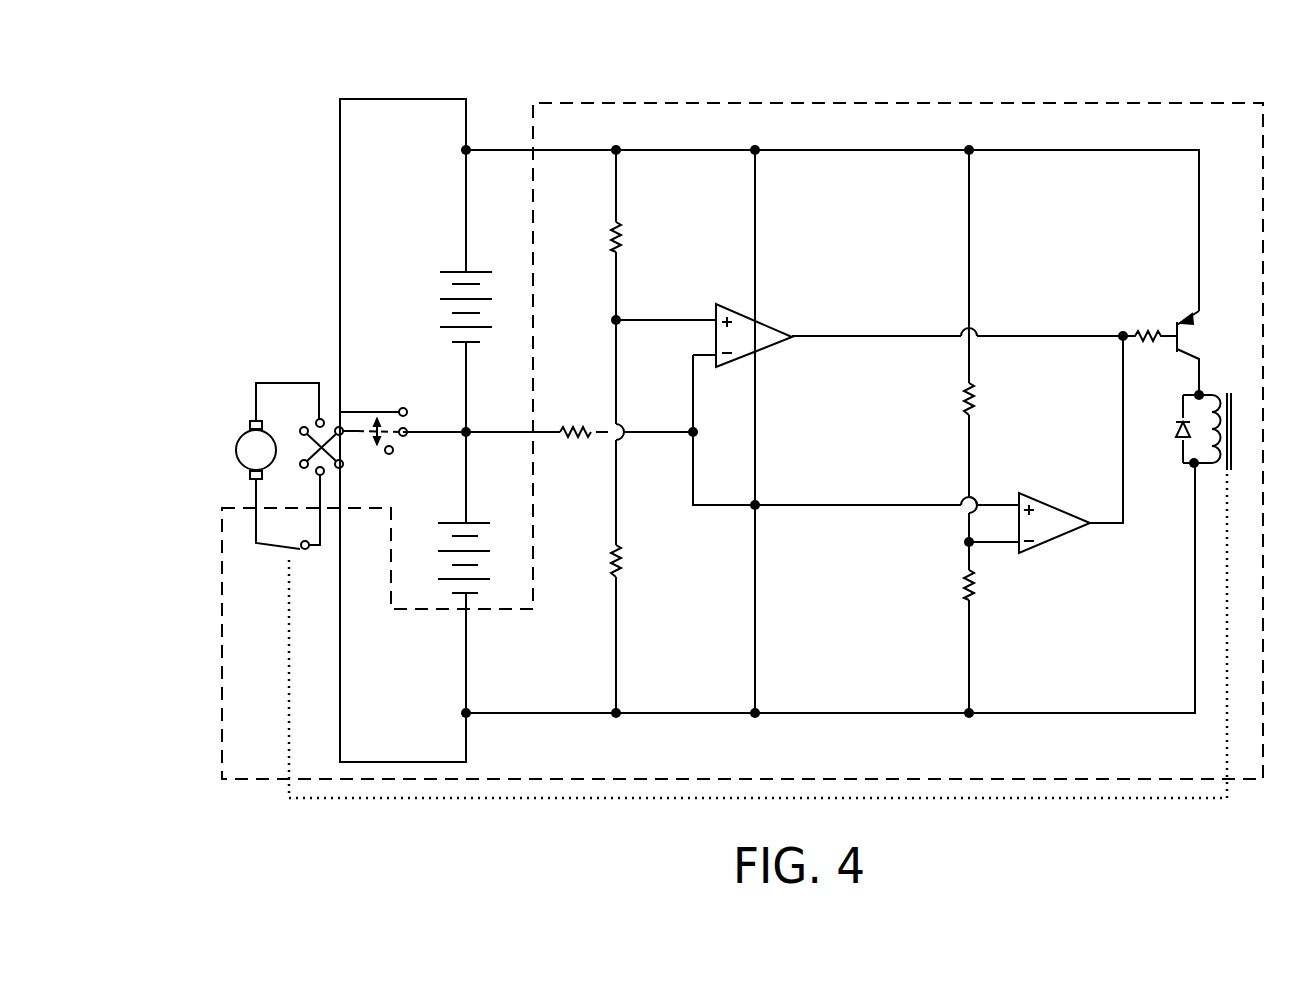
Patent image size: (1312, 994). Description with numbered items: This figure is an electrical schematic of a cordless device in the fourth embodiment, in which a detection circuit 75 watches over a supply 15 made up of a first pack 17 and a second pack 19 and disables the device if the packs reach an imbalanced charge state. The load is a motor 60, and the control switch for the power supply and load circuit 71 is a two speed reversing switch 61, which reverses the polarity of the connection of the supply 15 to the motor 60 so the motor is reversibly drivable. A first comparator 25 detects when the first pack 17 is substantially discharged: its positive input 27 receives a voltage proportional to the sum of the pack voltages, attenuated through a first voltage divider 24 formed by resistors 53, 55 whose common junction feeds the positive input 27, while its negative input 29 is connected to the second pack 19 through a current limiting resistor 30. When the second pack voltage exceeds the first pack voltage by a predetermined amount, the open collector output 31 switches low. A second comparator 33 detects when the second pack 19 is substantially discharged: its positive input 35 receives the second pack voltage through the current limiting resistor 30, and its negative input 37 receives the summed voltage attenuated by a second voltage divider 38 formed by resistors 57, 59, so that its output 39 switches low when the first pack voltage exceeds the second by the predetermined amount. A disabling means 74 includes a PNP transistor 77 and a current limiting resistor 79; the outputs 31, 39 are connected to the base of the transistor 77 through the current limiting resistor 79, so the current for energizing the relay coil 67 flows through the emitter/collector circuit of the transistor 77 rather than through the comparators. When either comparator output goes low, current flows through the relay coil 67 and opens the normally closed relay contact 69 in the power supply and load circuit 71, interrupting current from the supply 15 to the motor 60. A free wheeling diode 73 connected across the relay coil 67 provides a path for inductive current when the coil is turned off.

The supply 15 is at (456, 431).
The first pack 17 is at (453, 293).
The second pack 19 is at (452, 572).
The first voltage divider 24 is at (648, 406).
The first comparator 25 is at (766, 315).
The positive input 27 is at (715, 317).
The negative input 29 is at (715, 352).
The current limiting resistor 30 is at (575, 425).
The open collector output 31 is at (782, 332).
The second comparator 33 is at (1050, 495).
The positive input 35 is at (1018, 503).
The negative input 37 is at (1017, 548).
The second voltage divider 38 is at (927, 501).
The output 39 is at (1093, 527).
The resistor 53 is at (614, 231).
The resistor 55 is at (622, 562).
The resistor 57 is at (965, 398).
The resistor 59 is at (965, 590).
The motor 60 is at (236, 450).
The two speed reversing switch 61 is at (330, 422).
The relay coil 67 is at (1232, 379).
The normally closed relay contact 69 is at (282, 548).
The power supply and load circuit 71 is at (255, 488).
The free wheeling diode 73 is at (1175, 432).
The disabling means 74 is at (1248, 440).
The detection circuit 75 is at (950, 100).
The PNP transistor 77 is at (1196, 338).
The current limiting resistor 79 is at (1142, 332).